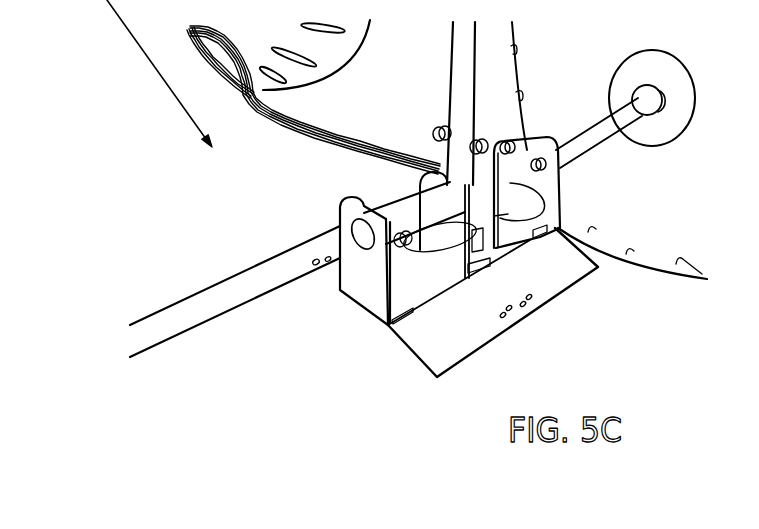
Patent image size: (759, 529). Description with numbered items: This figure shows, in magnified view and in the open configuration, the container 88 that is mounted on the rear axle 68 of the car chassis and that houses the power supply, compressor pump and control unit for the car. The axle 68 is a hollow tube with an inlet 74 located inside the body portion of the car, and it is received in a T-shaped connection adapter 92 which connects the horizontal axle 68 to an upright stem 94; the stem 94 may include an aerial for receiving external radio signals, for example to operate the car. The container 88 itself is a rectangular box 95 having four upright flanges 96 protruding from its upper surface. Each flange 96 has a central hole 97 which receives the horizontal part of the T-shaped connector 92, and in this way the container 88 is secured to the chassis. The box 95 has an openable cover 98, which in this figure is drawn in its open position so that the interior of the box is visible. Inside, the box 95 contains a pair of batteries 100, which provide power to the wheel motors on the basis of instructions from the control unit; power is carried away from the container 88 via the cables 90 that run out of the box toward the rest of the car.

The axle 68 is at (240, 272).
The inlet 74 is at (316, 266).
The container 88 is at (388, 352).
The cables 90 is at (382, 143).
The T-shaped connection adapter 92 is at (390, 197).
The upright stem 94 is at (458, 70).
The rectangular box 95 is at (372, 310).
The upright flanges 96 is at (560, 157).
The central hole 97 is at (338, 220).
The openable cover 98 is at (552, 292).
The batteries 100 is at (413, 283).